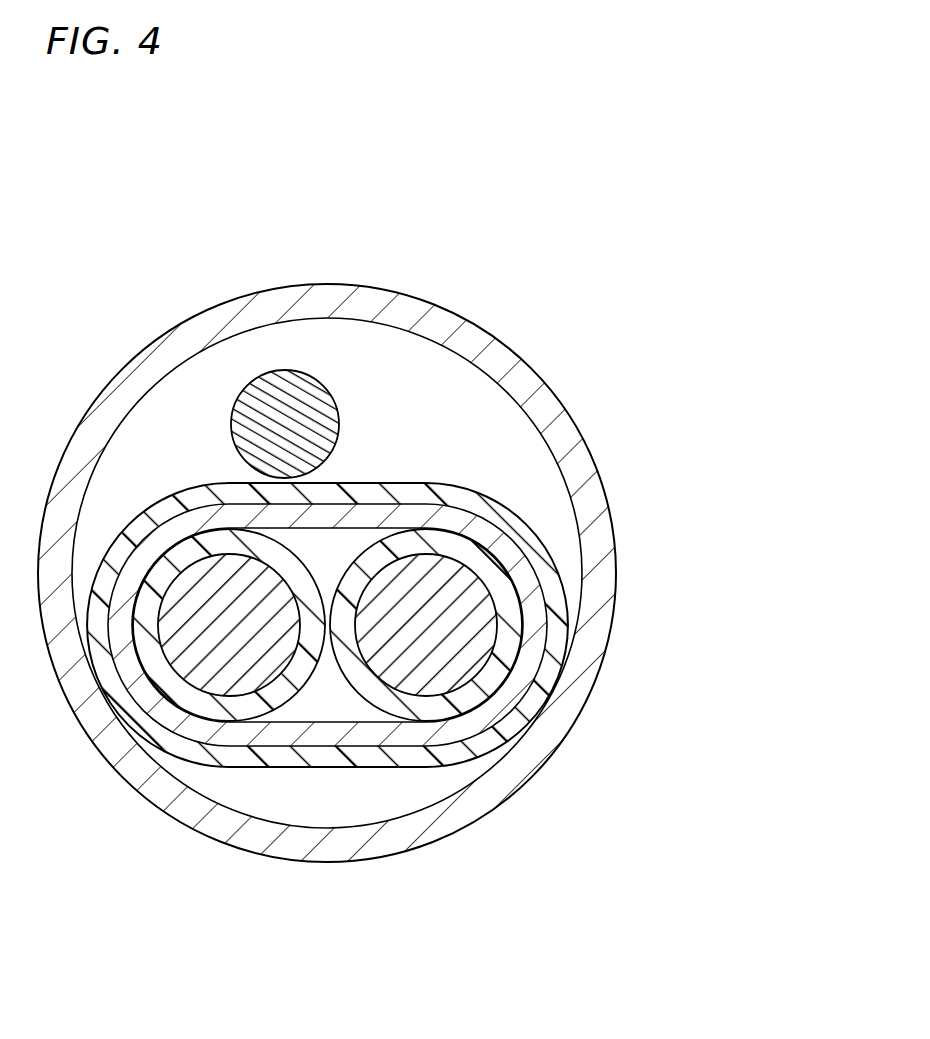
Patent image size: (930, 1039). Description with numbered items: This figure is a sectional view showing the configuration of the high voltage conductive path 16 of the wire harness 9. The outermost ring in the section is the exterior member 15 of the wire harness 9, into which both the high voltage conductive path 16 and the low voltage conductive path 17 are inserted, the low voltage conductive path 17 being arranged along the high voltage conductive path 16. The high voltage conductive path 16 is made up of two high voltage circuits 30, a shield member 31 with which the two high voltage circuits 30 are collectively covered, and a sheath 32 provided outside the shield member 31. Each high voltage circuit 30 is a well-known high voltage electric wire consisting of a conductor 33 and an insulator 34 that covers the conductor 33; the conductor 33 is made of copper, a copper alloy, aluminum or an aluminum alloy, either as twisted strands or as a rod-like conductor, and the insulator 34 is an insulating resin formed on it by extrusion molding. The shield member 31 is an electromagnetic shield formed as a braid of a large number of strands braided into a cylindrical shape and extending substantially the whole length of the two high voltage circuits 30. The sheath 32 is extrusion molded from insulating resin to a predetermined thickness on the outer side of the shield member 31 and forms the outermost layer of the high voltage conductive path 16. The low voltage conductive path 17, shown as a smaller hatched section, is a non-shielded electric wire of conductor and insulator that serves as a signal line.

The wire harness 9 is at (595, 221).
The exterior member 15 is at (526, 362).
The high voltage conductive path 16 is at (475, 488).
The low voltage conductive path 17 is at (287, 370).
The high voltage circuit 30 is at (175, 226).
The shield member 31 is at (367, 513).
The sheath 32 is at (401, 487).
The conductor 33 is at (197, 585).
The insulator 34 is at (218, 545).